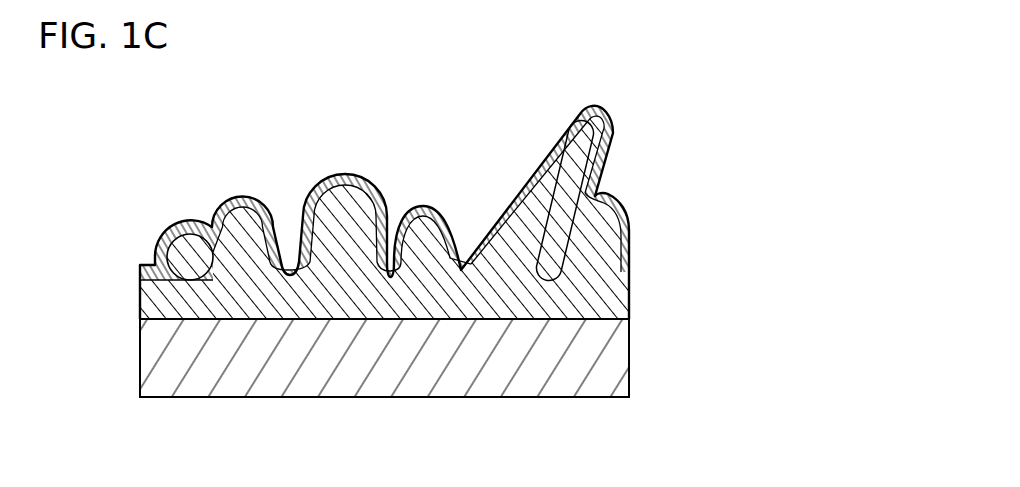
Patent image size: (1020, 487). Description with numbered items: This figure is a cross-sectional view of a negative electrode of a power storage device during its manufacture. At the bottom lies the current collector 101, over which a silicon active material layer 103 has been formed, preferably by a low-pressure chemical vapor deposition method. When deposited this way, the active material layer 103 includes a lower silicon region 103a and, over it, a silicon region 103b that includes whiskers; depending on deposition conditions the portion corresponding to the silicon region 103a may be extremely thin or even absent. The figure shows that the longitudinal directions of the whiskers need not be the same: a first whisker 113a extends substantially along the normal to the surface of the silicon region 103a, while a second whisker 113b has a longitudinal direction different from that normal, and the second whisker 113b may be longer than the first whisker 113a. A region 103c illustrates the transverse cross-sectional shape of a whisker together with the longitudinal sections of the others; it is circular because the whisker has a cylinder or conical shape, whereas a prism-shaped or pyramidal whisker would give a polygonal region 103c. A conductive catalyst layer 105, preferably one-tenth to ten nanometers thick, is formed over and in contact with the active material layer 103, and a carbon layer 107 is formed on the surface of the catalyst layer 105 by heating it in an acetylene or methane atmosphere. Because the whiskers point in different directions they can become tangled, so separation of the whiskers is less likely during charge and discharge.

The current collector 101 is at (407, 373).
The active material layer 103 is at (464, 209).
The silicon region 103a is at (643, 276).
The silicon region including whiskers 103b is at (622, 252).
The region 103c is at (181, 253).
The catalyst layer 105 is at (556, 146).
The carbon layer 107 is at (237, 198).
The first whisker 113a is at (352, 205).
The second whisker 113b is at (513, 224).